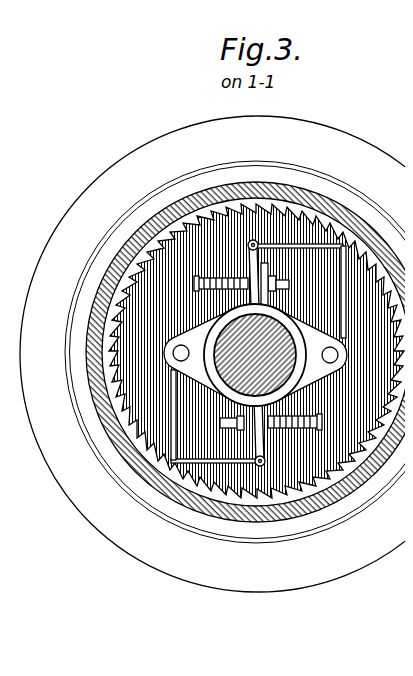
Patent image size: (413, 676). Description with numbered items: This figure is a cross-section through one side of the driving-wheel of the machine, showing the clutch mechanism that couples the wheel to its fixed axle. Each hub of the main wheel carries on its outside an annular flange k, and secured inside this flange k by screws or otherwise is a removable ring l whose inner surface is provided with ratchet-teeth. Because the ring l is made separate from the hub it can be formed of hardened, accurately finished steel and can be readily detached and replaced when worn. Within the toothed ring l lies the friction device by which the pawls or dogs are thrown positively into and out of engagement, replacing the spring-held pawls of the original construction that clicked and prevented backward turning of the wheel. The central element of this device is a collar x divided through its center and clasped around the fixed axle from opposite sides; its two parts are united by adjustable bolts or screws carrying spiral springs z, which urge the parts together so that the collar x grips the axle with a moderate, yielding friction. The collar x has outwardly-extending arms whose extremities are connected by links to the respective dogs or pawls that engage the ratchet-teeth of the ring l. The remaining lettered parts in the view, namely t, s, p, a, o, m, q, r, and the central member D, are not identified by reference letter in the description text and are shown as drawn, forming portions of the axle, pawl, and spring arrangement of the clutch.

The annular flange k is at (90, 427).
The removable ring l is at (271, 193).
The spiral springs z is at (256, 351).
The spring t is at (221, 292).
The spring s is at (295, 433).
The pin p is at (278, 285).
The bolt a is at (232, 436).
The screw o is at (329, 422).
The frame arm m is at (333, 287).
The collar x is at (255, 355).
The pivot rod q is at (278, 346).
The spring rod r is at (227, 265).
The drum D is at (255, 355).